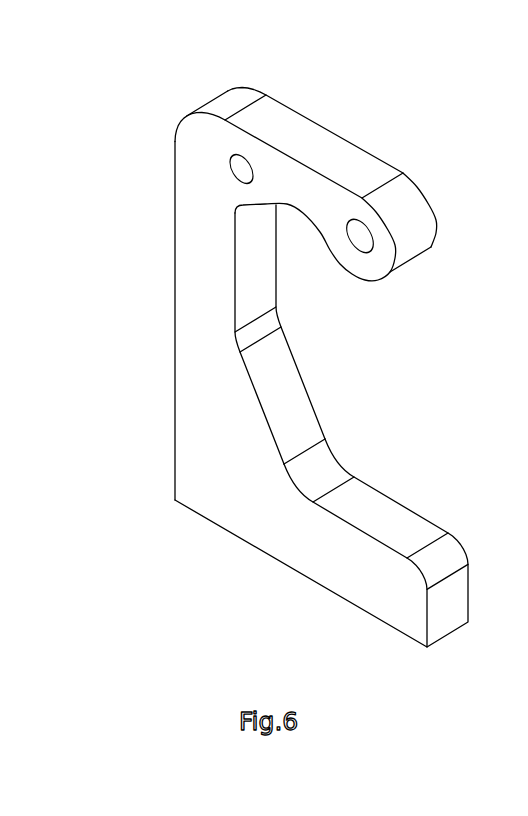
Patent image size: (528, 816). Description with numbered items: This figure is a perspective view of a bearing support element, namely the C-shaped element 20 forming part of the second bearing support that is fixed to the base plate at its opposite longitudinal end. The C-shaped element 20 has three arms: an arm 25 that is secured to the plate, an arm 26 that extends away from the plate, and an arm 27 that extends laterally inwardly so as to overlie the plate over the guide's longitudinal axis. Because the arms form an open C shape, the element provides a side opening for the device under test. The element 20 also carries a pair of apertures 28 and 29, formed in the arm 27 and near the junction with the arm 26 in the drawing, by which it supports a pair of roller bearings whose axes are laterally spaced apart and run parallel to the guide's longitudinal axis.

The C-shaped element 20 is at (281, 364).
The arm 25 is at (380, 590).
The arm 26 is at (190, 390).
The arm 27 is at (420, 230).
The aperture 28 is at (230, 172).
The aperture 29 is at (356, 250).